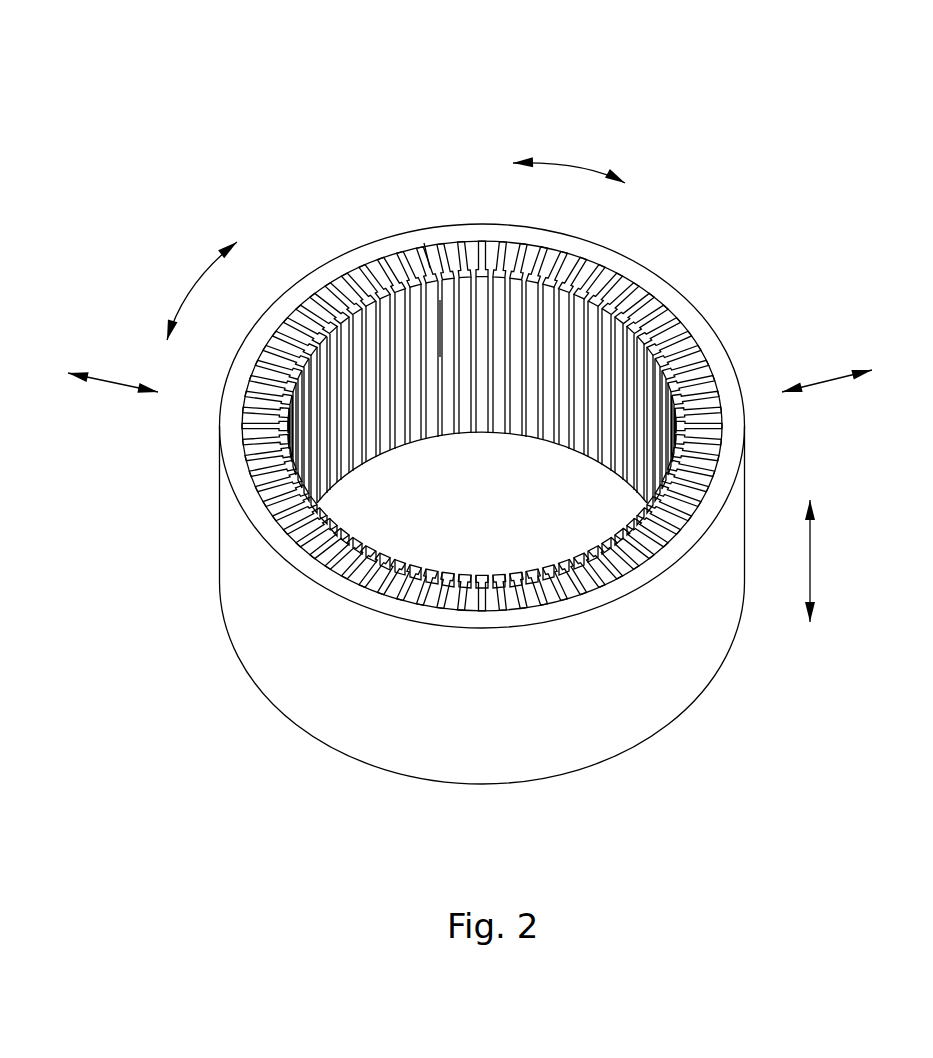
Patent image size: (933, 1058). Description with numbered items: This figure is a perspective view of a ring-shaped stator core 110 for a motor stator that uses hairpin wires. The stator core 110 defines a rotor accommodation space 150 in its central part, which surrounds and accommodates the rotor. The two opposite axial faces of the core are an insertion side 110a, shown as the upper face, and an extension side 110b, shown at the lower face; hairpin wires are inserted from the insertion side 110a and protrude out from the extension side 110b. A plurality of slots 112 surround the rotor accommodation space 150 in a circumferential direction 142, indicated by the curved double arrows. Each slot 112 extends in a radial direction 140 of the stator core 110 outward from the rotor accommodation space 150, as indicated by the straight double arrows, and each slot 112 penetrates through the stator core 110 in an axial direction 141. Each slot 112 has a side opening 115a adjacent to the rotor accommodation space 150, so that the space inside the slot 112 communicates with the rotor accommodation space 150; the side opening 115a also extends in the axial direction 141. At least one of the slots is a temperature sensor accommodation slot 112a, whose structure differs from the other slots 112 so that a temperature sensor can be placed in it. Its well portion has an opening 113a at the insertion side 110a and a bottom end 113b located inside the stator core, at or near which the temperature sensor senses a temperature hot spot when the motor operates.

The stator core 110 is at (135, 77).
The insertion side 110a is at (633, 268).
The extension side 110b is at (533, 787).
The slots 112 is at (330, 282).
The temperature sensor accommodation slot 112a is at (425, 242).
The opening of the well portion 113a is at (430, 268).
The bottom end of the well portion 113b is at (440, 357).
The side opening 115a is at (428, 400).
The radial direction 140 is at (112, 382).
The axial direction 141 is at (810, 557).
The circumferential direction 142 is at (193, 283).
The rotor accommodation space 150 is at (505, 535).